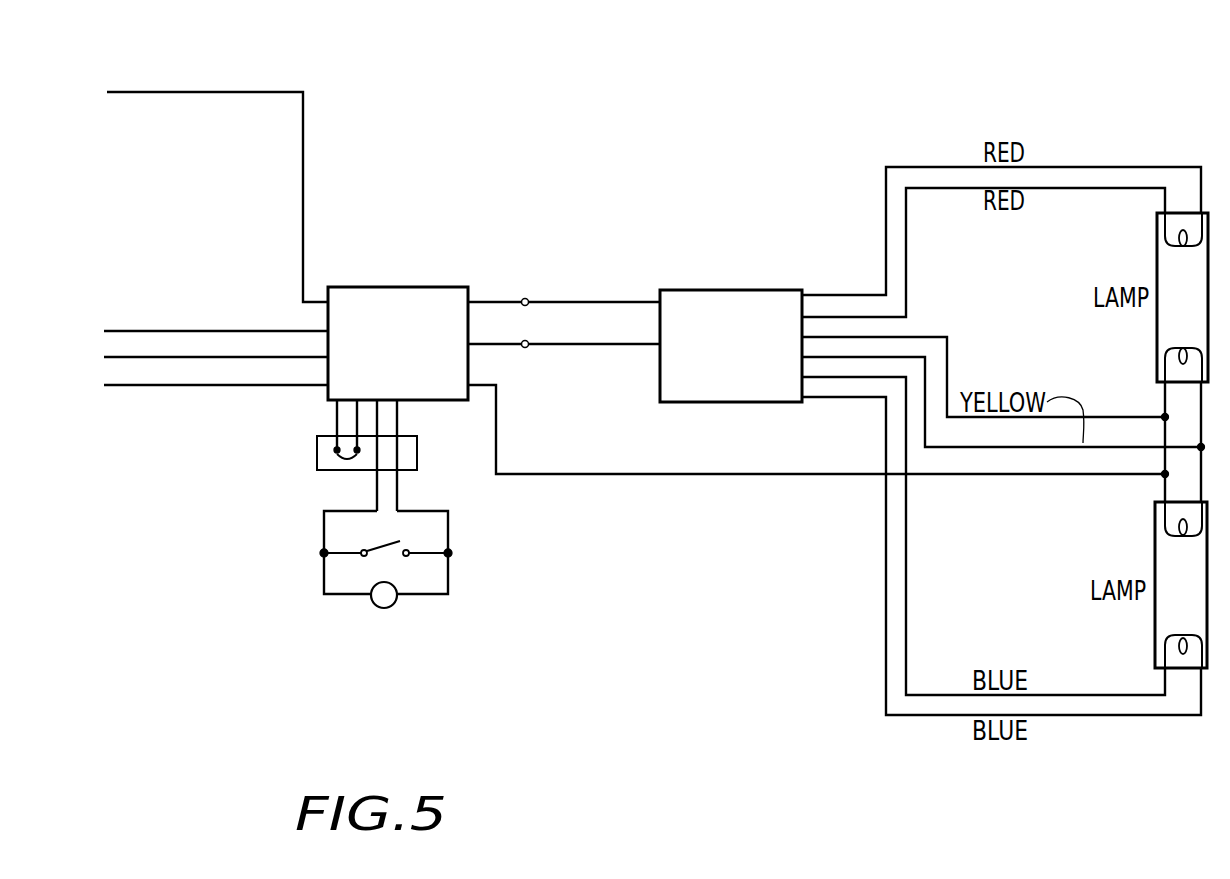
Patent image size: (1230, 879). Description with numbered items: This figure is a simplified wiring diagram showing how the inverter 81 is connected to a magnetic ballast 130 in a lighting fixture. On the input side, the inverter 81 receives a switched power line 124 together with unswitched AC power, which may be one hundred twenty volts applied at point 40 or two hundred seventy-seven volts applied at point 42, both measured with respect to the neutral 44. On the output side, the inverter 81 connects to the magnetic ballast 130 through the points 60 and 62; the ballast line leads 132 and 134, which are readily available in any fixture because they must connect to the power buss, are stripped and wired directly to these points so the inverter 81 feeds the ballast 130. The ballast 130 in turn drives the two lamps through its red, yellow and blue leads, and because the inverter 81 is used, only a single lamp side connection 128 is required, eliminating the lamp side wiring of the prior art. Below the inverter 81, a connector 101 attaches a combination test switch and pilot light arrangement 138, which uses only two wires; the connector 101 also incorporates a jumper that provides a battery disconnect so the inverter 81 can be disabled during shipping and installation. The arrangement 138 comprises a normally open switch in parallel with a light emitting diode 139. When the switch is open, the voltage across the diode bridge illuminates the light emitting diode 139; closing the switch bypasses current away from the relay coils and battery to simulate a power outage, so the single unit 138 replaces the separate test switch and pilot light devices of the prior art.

The switched power line 124 is at (165, 93).
The neutral 44 is at (222, 330).
The 120 volt AC connection point 40 is at (152, 358).
The 277 volt AC connection point 42 is at (218, 386).
The inverter 81 is at (395, 298).
The ballast connection point 60 is at (523, 299).
The ballast connection point 62 is at (525, 348).
The ballast line lead 132 is at (628, 300).
The ballast line lead 134 is at (640, 347).
The magnetic ballast 130 is at (717, 290).
The connector 101 is at (317, 453).
The test switch and pilot light arrangement 138 is at (336, 614).
The light emitting diode 139 is at (400, 603).
The lamp side connection 128 is at (1163, 476).